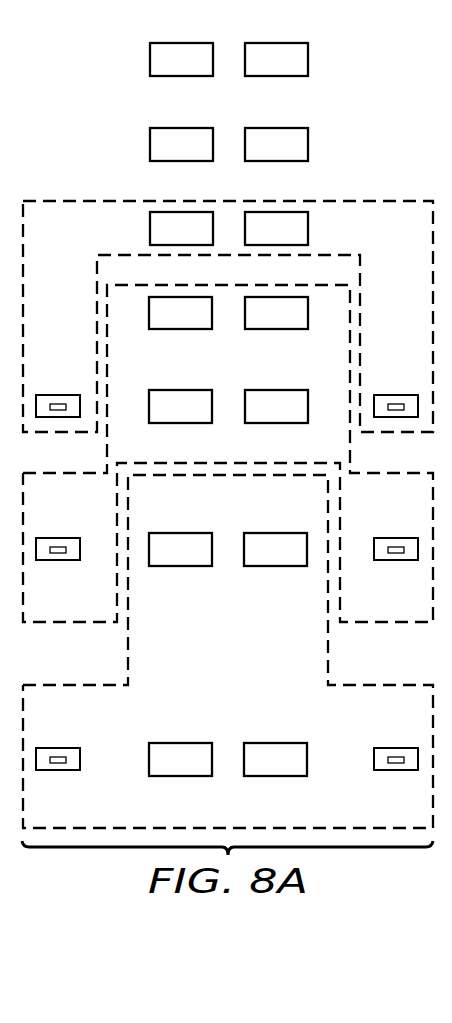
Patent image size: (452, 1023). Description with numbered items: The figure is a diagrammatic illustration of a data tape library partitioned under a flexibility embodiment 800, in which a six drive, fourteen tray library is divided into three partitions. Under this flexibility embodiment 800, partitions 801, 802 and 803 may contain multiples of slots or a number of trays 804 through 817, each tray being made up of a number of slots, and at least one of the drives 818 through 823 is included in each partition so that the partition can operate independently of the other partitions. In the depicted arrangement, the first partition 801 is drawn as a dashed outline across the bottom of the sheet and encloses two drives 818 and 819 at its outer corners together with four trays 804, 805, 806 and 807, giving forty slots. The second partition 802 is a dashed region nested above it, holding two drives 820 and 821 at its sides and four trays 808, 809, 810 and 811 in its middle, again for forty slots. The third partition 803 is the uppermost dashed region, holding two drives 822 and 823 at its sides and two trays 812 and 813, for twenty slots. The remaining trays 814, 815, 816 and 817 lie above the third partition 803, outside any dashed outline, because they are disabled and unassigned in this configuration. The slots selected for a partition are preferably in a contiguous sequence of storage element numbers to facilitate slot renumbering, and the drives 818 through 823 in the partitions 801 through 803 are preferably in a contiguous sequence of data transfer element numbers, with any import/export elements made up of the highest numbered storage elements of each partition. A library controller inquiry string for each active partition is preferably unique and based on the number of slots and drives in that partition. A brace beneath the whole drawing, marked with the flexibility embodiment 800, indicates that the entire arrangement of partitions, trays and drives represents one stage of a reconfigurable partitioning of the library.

The flexibility embodiment 800 is at (89, 878).
The first partition 801 is at (63, 684).
The second partition 802 is at (363, 623).
The third partition 803 is at (404, 200).
The tray 804 is at (180, 743).
The tray 805 is at (275, 743).
The tray 806 is at (180, 567).
The tray 807 is at (275, 567).
The tray 808 is at (187, 390).
The tray 809 is at (286, 390).
The tray 810 is at (176, 330).
The tray 811 is at (271, 330).
The tray 812 is at (150, 231).
The tray 813 is at (308, 231).
The tray 814 is at (150, 146).
The tray 815 is at (308, 146).
The tray 816 is at (150, 61).
The tray 817 is at (308, 61).
The drive 818 is at (58, 748).
The drive 819 is at (397, 748).
The drive 820 is at (58, 538).
The drive 821 is at (397, 538).
The drive 822 is at (58, 395).
The drive 823 is at (397, 395).